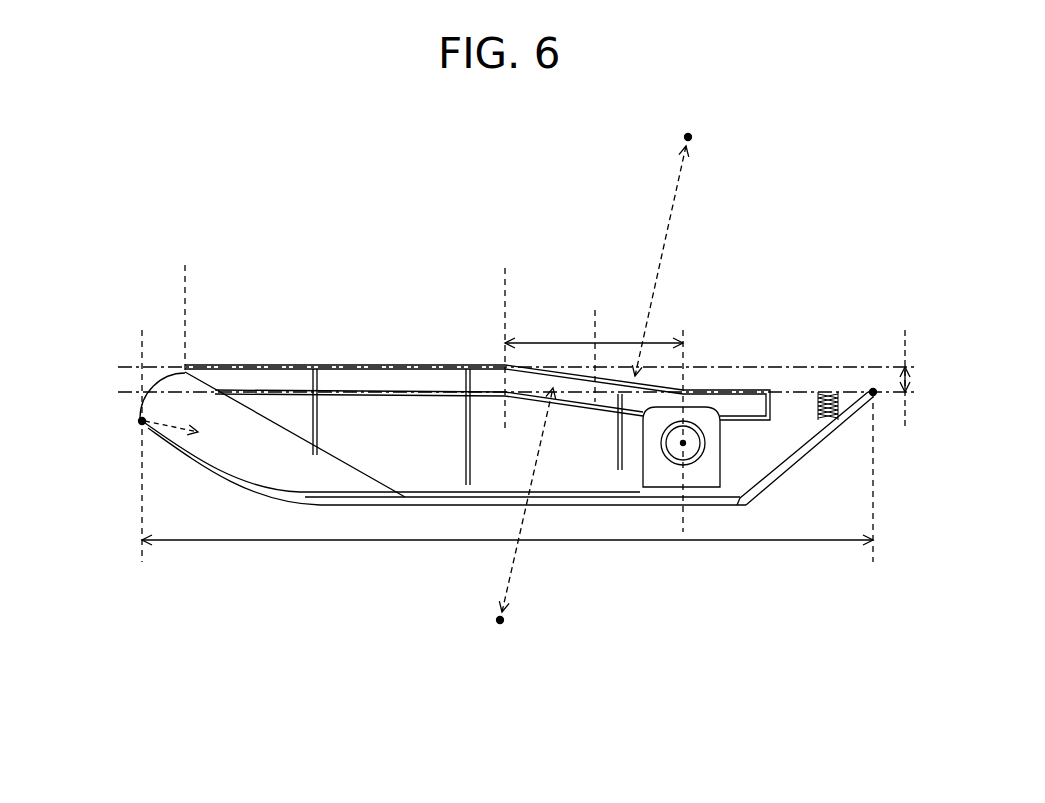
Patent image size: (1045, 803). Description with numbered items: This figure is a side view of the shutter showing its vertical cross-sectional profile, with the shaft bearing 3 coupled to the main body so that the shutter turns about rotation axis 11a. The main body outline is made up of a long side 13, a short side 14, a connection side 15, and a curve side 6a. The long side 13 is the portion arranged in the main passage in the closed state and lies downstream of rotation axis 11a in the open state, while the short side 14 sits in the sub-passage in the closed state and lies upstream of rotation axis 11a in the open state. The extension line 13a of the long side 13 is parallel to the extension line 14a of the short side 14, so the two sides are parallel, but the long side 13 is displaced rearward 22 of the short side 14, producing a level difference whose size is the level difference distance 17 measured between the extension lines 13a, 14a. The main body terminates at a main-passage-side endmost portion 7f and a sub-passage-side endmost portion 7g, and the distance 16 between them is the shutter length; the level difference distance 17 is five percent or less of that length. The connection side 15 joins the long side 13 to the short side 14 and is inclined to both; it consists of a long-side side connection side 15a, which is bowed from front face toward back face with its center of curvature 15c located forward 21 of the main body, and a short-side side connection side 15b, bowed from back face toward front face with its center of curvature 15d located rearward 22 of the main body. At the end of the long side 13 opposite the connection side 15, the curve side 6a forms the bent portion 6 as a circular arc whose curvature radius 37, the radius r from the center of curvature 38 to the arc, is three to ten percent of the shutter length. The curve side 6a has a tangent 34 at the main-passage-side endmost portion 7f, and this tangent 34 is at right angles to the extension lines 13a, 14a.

The shaft bearing 3 is at (652, 517).
The bent portion 6 is at (142, 340).
The curve side 6a is at (183, 370).
The main-passage-side endmost portion 7f is at (140, 422).
The sub-passage-side endmost portion 7g is at (876, 397).
The rotation axis 11a is at (681, 445).
The long side 13 is at (505, 313).
The extension line of long side 13a is at (126, 366).
The short side 14 is at (683, 475).
The extension line of short side 14a is at (118, 391).
The connection side 15 is at (655, 225).
The long-side side connection side 15a is at (566, 342).
The short-side side connection side 15b is at (652, 342).
The center of curvature 15c is at (496, 622).
The center of curvature 15d is at (692, 135).
The distance 16 is at (330, 541).
The level difference distance 17 is at (926, 380).
The forward 21 is at (533, 748).
The rearward 22 is at (521, 166).
The tangent 34 is at (140, 514).
The curvature radius 37 is at (143, 422).
The center of curvature 38 is at (186, 373).